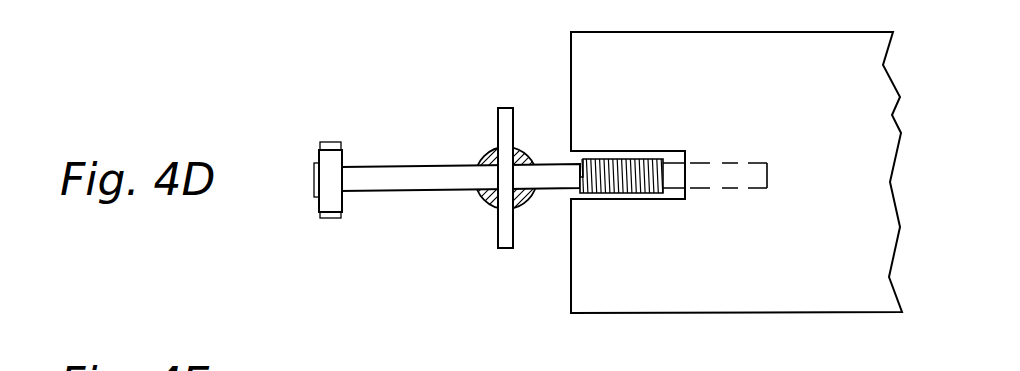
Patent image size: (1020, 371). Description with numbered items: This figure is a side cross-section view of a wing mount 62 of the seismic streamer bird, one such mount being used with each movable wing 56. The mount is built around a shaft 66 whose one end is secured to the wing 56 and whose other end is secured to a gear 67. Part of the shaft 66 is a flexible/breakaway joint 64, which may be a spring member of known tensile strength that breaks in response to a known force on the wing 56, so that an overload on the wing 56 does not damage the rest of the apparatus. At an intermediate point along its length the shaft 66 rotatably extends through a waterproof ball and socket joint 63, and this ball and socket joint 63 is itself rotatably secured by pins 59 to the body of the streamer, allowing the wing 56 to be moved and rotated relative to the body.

The wing 56 is at (728, 32).
The pins 59 is at (503, 108).
The wing mount 62 is at (426, 273).
The ball and socket joint 63 is at (484, 200).
The flexible/breakaway joint 64 is at (620, 158).
The shaft 66 is at (408, 167).
The gear 67 is at (331, 218).